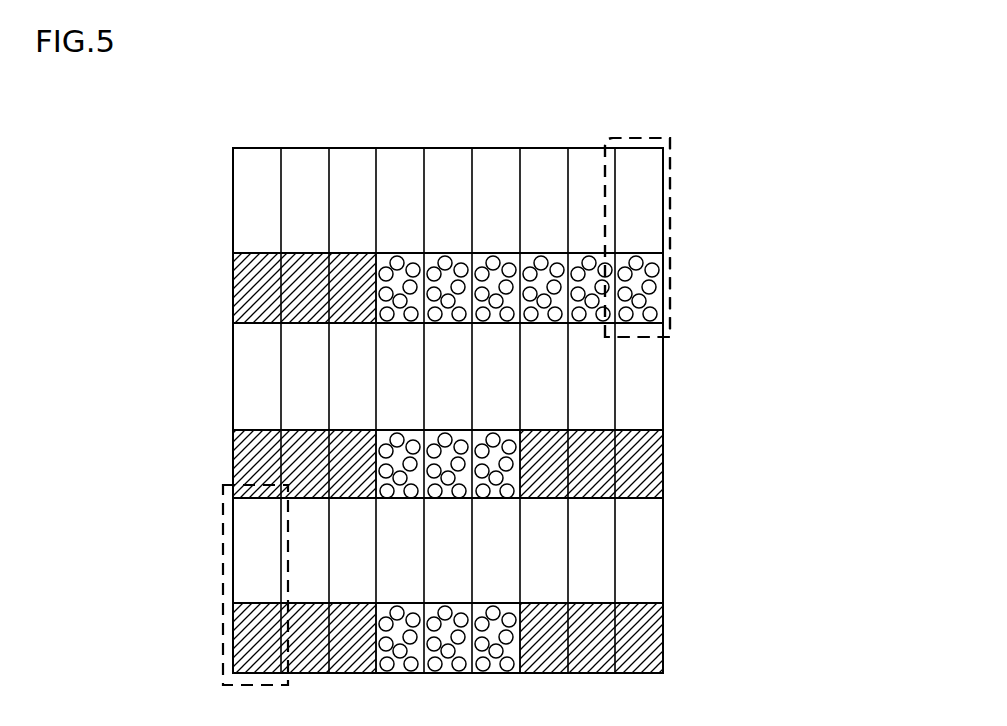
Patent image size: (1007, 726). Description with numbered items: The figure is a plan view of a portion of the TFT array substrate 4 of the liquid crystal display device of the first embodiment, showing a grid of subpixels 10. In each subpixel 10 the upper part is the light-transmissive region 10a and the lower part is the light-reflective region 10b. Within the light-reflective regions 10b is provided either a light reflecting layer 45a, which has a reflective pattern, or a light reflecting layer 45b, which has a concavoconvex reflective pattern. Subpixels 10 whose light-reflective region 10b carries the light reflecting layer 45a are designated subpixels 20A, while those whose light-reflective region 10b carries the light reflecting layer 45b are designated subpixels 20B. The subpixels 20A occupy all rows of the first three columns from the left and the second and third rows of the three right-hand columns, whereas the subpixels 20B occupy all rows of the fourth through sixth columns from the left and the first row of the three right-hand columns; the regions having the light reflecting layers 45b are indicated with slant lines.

The TFT array substrate 4 is at (655, 123).
The subpixel 10 is at (137, 183).
The light-transmissive region 10a is at (247, 205).
The light-reflective region 10b is at (247, 288).
The subpixel 20A is at (225, 610).
The subpixel 20B is at (670, 225).
The light reflecting layer 45a is at (350, 268).
The light reflecting layer 45b is at (483, 268).